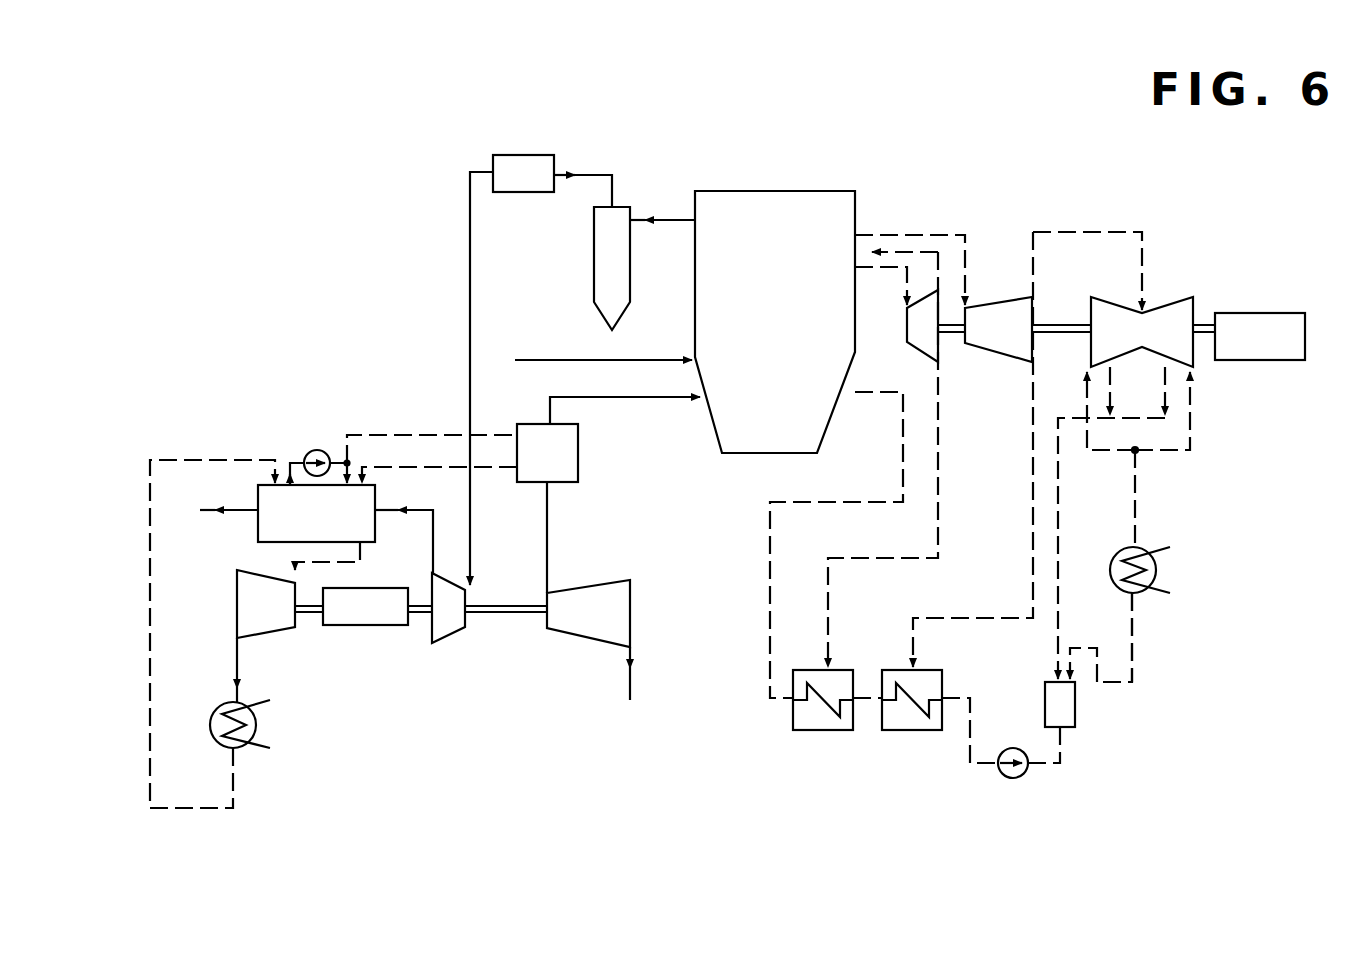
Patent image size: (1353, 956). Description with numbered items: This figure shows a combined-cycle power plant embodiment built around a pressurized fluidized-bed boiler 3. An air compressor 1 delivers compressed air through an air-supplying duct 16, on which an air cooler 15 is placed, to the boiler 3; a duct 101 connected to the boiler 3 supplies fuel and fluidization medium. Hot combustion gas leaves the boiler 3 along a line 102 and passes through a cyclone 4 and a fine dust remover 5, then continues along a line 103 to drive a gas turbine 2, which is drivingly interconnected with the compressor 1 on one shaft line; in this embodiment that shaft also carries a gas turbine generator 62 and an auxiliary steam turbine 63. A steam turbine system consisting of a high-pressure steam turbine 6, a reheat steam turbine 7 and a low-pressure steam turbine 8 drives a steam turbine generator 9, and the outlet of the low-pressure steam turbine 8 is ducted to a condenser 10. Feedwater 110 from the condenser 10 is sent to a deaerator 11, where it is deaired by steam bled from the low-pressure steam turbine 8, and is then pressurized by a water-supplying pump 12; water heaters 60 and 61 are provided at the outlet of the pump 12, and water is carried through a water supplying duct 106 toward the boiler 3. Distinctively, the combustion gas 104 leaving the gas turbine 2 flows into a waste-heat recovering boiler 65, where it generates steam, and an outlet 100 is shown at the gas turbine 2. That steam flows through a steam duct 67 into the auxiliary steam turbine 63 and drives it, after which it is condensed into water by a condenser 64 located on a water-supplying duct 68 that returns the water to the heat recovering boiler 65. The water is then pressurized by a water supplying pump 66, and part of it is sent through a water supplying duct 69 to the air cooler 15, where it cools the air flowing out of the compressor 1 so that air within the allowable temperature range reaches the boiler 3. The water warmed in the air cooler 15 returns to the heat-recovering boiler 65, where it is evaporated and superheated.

The air compressor 1 is at (582, 640).
The gas turbine 2 is at (452, 643).
The pressurized fluidized-bed boiler 3 is at (840, 212).
The cyclone 4 is at (594, 248).
The fine dust remover 5 is at (525, 152).
The high-pressure steam turbine 6 is at (912, 348).
The reheat steam turbine 7 is at (998, 298).
The low-pressure steam turbine 8 is at (1174, 299).
The steam turbine generator 9 is at (1253, 313).
The condenser 10 is at (1157, 570).
The deaerator 11 is at (1075, 715).
The water-supplying pump 12 is at (1013, 778).
The air cooler 15 is at (578, 457).
The air-supplying duct 16 is at (547, 530).
The water heater 60 is at (908, 731).
The water heater 61 is at (820, 731).
The gas turbine generator 62 is at (360, 625).
The auxiliary steam turbine 63 is at (265, 633).
The condenser 64 is at (257, 727).
The waste-heat recovering boiler 65 is at (255, 532).
The water supplying pump 66 is at (317, 450).
The steam duct 67 is at (362, 566).
The water-supplying duct 68 is at (148, 668).
The water supplying duct 69 is at (398, 432).
The exhaust gas outlet 100 is at (632, 688).
The duct 101 is at (523, 360).
The fuel feed line 102 is at (668, 220).
The line 103 is at (468, 278).
The combustion exhaust gas 104 is at (434, 529).
The water supplying duct 106 is at (769, 580).
The feedwater 110 is at (1133, 638).